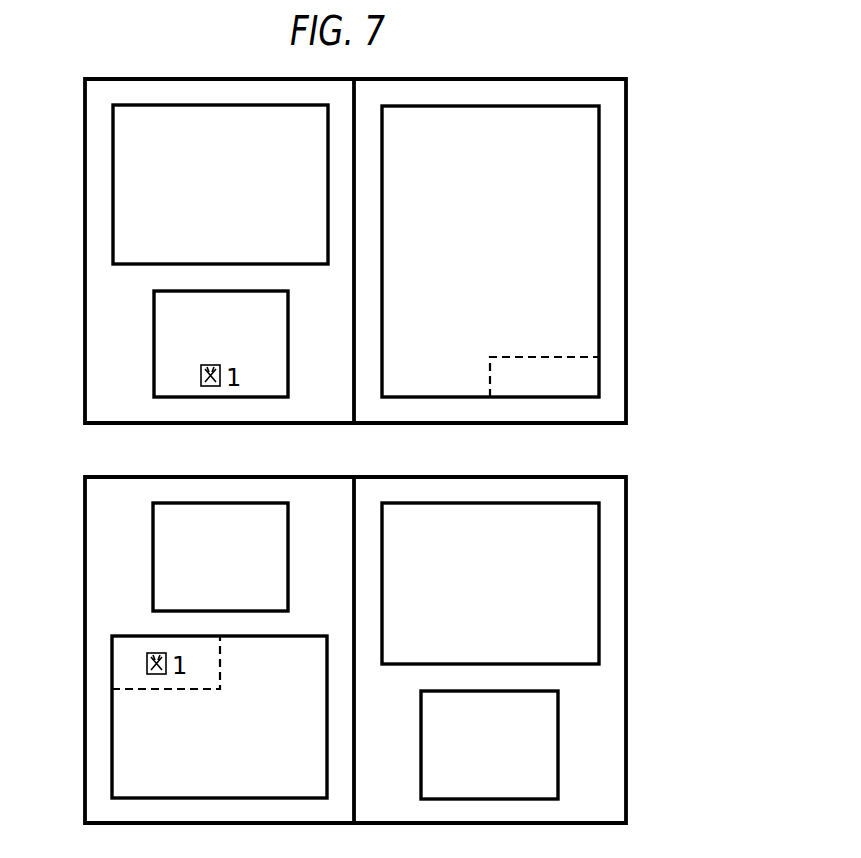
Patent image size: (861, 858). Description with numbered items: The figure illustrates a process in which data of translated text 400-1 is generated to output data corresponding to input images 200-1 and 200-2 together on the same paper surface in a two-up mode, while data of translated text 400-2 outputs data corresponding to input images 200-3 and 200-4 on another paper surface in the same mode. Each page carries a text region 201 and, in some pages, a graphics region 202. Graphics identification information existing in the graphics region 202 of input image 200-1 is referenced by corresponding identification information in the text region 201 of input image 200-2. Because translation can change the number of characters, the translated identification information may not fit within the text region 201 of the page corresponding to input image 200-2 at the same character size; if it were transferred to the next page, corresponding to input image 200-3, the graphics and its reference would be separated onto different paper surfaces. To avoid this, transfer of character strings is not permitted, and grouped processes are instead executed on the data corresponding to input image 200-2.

The input image 200-1 is at (157, 79).
The input image 200-2 is at (480, 79).
The input image 200-3 is at (157, 477).
The input image 200-4 is at (480, 477).
The text region 201 is at (113, 186).
The graphics region 202 is at (153, 340).
The data of translated text 400-1 is at (408, 225).
The data of translated text 400-2 is at (408, 625).